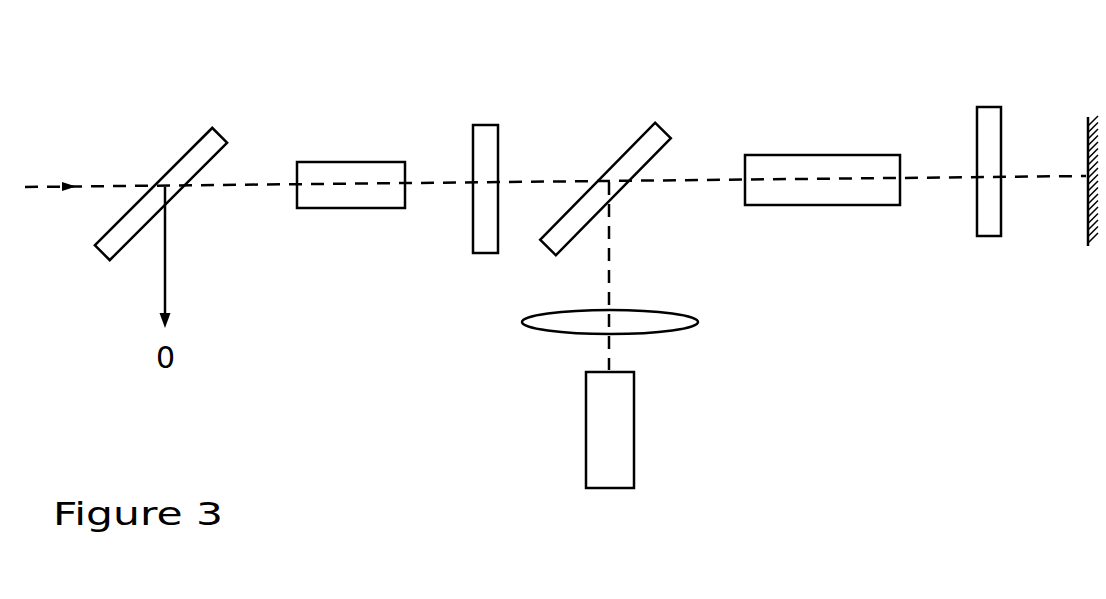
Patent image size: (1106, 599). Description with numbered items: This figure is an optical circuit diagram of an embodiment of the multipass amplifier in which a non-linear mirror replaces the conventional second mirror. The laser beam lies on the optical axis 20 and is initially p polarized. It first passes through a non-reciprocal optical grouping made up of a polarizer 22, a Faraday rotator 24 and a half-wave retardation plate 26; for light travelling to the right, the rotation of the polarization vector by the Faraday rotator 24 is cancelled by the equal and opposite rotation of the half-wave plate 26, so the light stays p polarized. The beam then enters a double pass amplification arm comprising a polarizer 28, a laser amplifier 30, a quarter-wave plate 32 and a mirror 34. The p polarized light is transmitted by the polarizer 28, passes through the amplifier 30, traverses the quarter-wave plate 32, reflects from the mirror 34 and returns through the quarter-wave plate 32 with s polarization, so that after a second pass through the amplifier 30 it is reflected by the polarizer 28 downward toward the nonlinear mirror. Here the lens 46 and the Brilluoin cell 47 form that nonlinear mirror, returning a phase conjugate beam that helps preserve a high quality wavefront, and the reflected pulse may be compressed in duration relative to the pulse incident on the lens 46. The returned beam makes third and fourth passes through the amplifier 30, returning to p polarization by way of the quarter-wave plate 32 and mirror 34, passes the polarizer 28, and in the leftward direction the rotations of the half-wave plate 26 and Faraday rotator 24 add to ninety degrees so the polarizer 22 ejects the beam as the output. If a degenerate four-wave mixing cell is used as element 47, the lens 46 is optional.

The optical axis 20 is at (92, 187).
The polarizer 22 is at (187, 150).
The Faraday rotator 24 is at (315, 162).
The half-wave retardation plate 26 is at (484, 125).
The polarizer 28 is at (647, 125).
The laser amplifier 30 is at (797, 155).
The quarter-wave plate 32 is at (985, 107).
The mirror 34 is at (1085, 232).
The lens 46 is at (687, 313).
The Brilluoin cell 47 is at (634, 437).